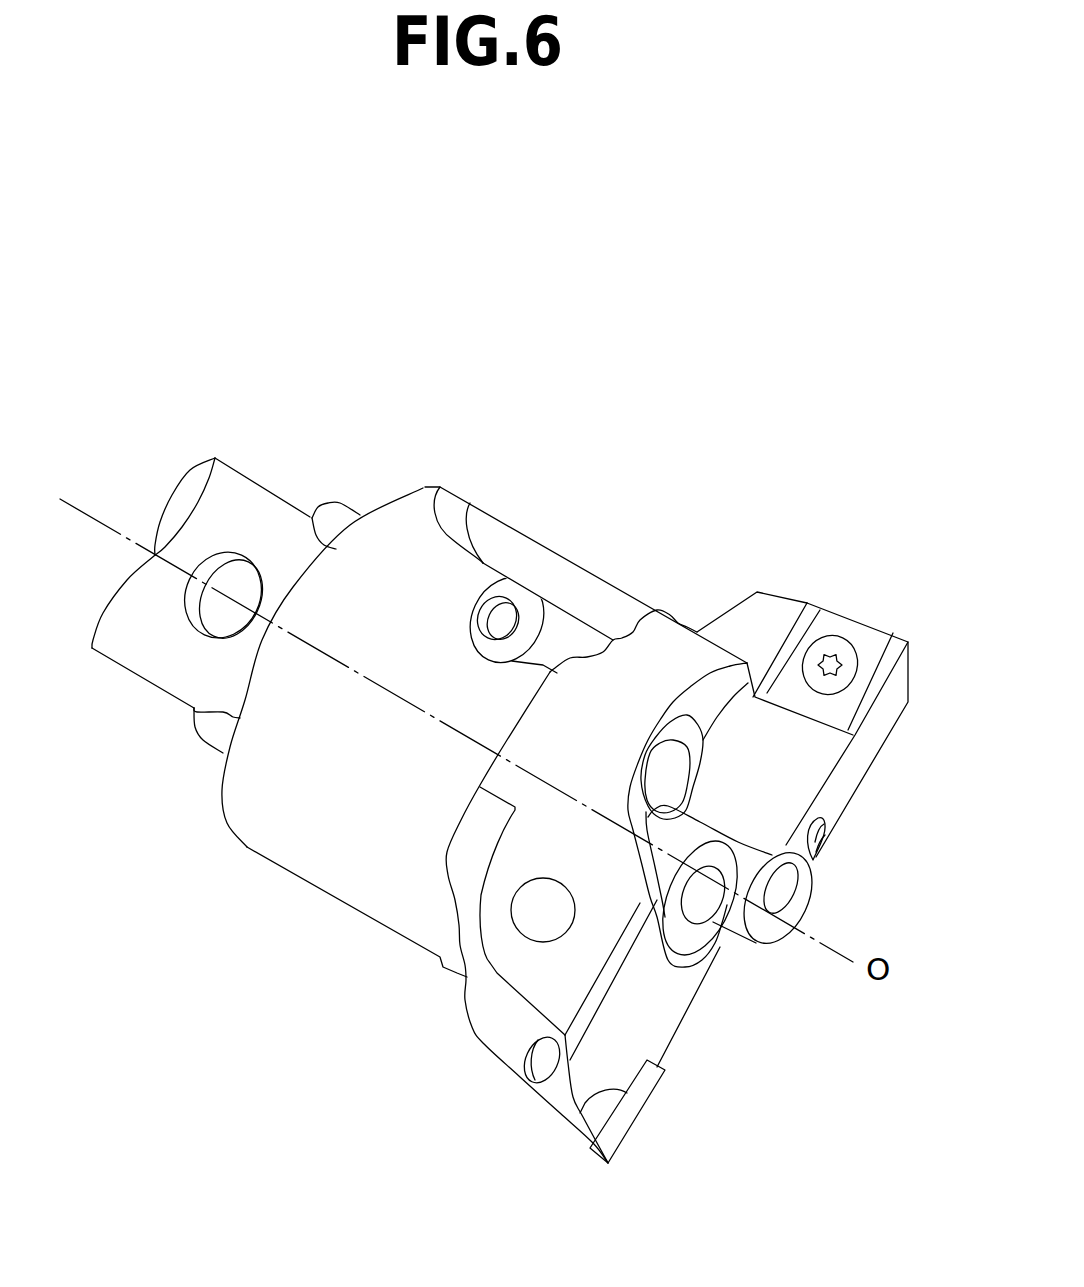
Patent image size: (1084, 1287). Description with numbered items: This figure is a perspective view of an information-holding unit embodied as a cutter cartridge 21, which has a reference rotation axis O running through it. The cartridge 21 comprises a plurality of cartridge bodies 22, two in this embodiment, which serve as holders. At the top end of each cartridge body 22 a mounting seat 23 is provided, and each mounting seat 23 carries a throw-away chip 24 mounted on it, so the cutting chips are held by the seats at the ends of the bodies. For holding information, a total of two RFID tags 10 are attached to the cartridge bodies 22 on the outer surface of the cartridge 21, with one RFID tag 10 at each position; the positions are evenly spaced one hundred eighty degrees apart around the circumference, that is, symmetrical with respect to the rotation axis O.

The RFID tag 10 is at (530, 940).
The cutter cartridge 21 is at (905, 453).
The cartridge body 22 is at (663, 643).
The mounting seat 23 is at (800, 608).
The throw-away chip 24 is at (877, 637).